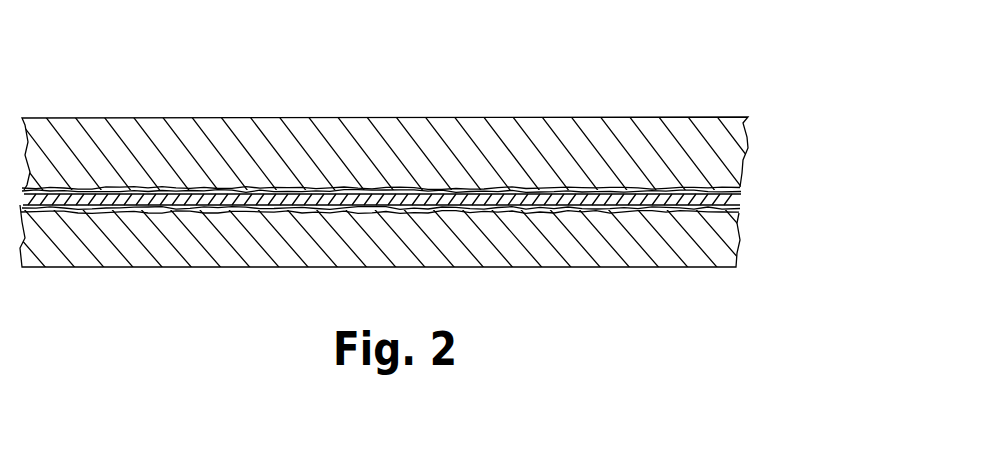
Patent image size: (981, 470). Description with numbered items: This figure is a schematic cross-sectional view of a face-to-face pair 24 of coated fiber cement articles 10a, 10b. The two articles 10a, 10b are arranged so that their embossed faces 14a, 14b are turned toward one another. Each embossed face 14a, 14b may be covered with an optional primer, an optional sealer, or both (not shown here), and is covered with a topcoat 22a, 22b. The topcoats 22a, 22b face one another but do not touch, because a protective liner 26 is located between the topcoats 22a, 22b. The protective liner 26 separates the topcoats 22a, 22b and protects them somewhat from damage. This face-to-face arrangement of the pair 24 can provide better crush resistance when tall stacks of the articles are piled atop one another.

The face-to-face pair 24 is at (613, 80).
The coated fiber cement article 10a is at (728, 144).
The coated fiber cement article 10b is at (728, 238).
The embossed face 14a is at (147, 187).
The embossed face 14b is at (157, 213).
The topcoat 22a is at (743, 185).
The topcoat 22b is at (743, 213).
The protective liner 26 is at (743, 195).